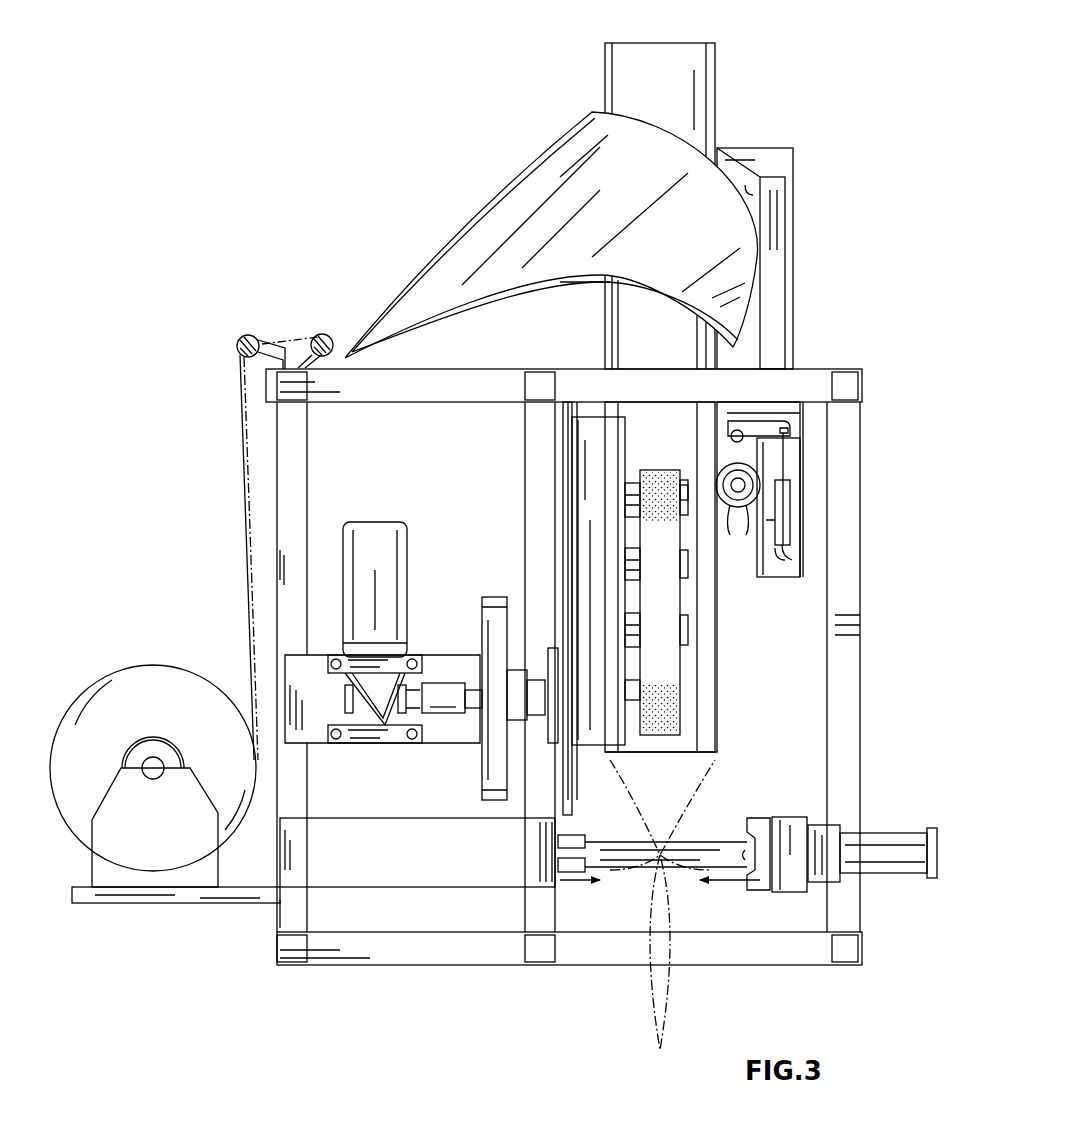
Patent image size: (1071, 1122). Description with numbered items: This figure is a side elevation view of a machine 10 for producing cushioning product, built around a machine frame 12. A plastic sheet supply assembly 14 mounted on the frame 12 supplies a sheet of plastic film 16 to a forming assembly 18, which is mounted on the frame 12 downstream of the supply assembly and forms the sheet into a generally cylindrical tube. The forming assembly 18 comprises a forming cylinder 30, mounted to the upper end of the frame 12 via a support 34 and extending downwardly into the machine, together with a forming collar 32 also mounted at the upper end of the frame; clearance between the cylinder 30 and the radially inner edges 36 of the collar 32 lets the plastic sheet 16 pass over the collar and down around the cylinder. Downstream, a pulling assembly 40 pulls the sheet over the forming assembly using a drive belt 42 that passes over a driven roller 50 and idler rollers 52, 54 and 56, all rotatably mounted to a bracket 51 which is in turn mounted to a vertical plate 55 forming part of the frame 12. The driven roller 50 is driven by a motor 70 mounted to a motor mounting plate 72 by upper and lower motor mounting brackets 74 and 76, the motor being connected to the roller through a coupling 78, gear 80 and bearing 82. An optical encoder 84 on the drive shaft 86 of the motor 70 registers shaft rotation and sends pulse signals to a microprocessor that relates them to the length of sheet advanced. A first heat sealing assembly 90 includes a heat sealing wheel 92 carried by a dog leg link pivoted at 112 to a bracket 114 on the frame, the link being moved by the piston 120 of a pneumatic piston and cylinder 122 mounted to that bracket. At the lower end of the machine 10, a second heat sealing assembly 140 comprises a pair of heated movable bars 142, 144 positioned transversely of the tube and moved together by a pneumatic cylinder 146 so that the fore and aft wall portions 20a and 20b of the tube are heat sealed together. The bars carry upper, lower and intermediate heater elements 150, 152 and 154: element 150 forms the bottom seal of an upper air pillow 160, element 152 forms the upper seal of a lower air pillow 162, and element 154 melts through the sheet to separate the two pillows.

The machine 10 is at (228, 1027).
The machine frame 12 is at (862, 442).
The plastic sheet supply assembly 14 is at (127, 930).
The plastic sheet 16 is at (237, 446).
The forming assembly 18 is at (574, 113).
The fore wall portion 20a is at (762, 772).
The aft wall portion 20b is at (652, 833).
The forming cylinder 30 is at (719, 92).
The forming collar 32 is at (535, 283).
The support 34 is at (795, 181).
The radially inner edges 36 is at (746, 200).
The pulling assembly 40 is at (690, 722).
The drive belt 42 is at (665, 632).
The driven roller 50 is at (628, 695).
The bracket 51 is at (600, 472).
The idler roller 52 is at (628, 643).
The idler roller 54 is at (628, 575).
The vertical plate 55 is at (566, 421).
The idler roller 56 is at (690, 490).
The motor 70 is at (368, 525).
The motor mounting plate 72 is at (302, 674).
The upper motor mounting bracket 74 is at (408, 661).
The lower motor mounting bracket 76 is at (402, 730).
The coupling 78 is at (438, 692).
The gear 80 is at (480, 776).
The bearing 82 is at (574, 700).
The optical encoder 84 is at (547, 690).
The drive shaft 86 is at (404, 726).
The first heat sealing assembly 90 is at (775, 382).
The heat sealing wheel 92 is at (760, 462).
The pivot 112 is at (734, 428).
The bracket 114 is at (762, 422).
The piston 120 is at (785, 459).
The pneumatic piston and cylinder 122 is at (781, 517).
The second heat sealing assembly 140 is at (801, 797).
The heated movable bar 142 is at (558, 860).
The heated movable bar 144 is at (752, 882).
The pneumatic cylinder 146 is at (888, 880).
The upper heater element 150 is at (757, 819).
The lower heater element 152 is at (746, 882).
The intermediate heater element 154 is at (810, 840).
The upper air pillow 160 is at (635, 797).
The lower air pillow 162 is at (684, 999).